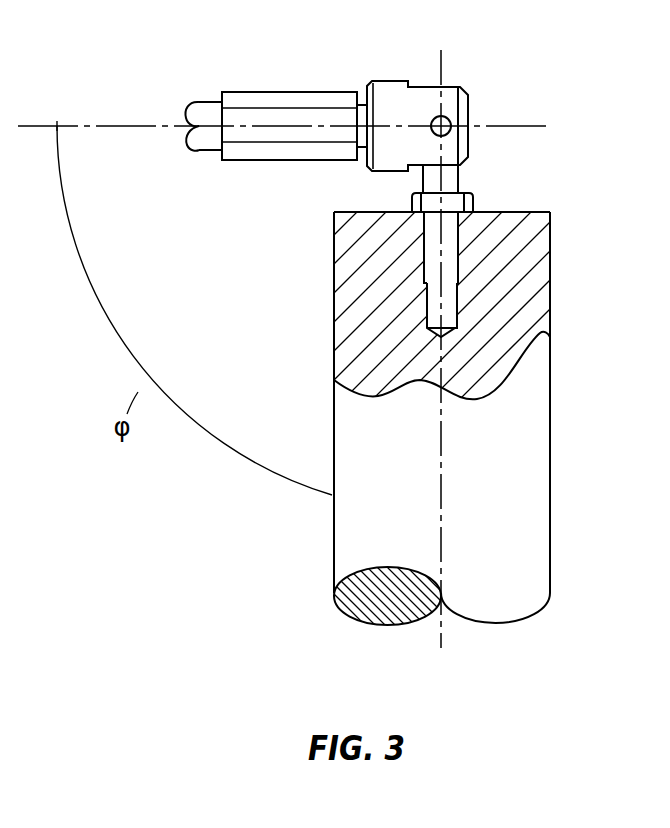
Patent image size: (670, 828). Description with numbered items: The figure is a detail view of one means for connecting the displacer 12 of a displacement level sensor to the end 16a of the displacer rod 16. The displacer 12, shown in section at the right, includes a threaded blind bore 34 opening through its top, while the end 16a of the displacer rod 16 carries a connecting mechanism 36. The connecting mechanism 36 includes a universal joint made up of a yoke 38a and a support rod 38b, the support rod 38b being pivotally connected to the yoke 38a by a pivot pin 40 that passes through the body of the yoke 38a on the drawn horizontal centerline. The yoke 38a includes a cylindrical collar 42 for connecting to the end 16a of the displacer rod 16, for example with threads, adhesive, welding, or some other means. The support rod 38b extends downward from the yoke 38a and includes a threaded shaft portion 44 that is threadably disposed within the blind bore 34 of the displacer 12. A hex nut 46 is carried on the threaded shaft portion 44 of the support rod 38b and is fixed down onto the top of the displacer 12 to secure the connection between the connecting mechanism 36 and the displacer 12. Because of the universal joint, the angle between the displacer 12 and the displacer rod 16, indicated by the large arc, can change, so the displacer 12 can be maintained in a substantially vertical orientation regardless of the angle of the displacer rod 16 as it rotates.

The displacer 12 is at (540, 526).
The displacer rod 16 is at (209, 151).
The end of the displacer rod 16a is at (217, 103).
The threaded blind bore 34 is at (453, 311).
The connecting mechanism 36 is at (390, 86).
The yoke 38a is at (413, 95).
The support rod 38b is at (459, 183).
The pivot pin 40 is at (451, 117).
The cylindrical collar 42 is at (355, 162).
The threaded shaft portion 44 is at (450, 255).
The hex nut 46 is at (412, 198).